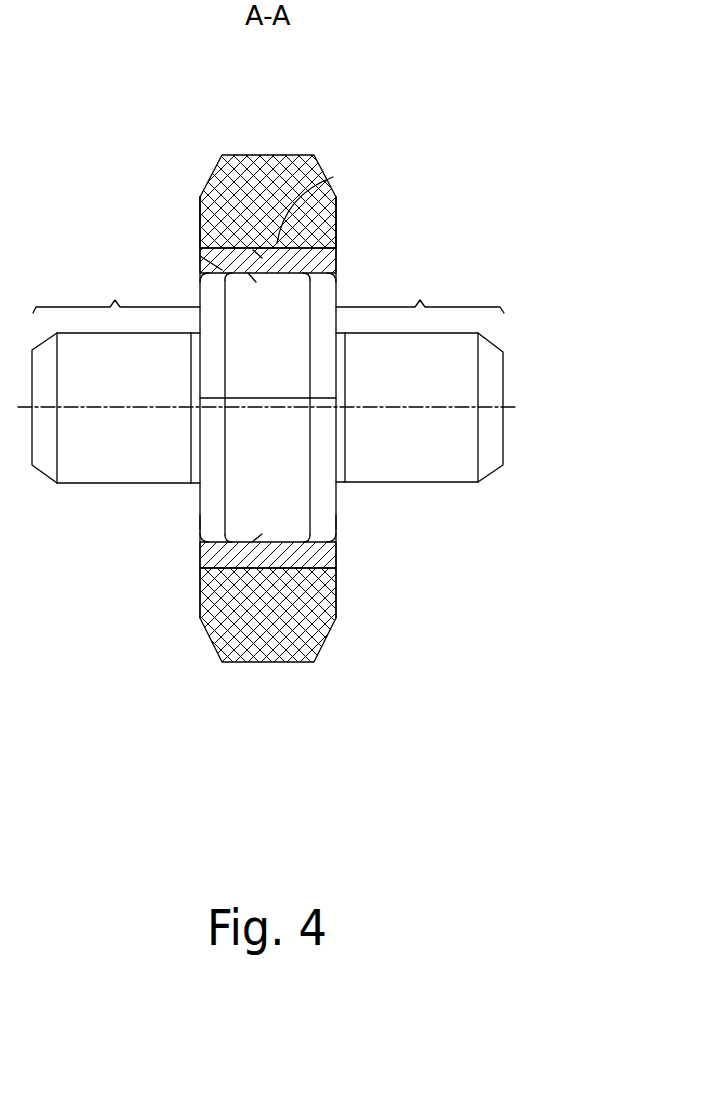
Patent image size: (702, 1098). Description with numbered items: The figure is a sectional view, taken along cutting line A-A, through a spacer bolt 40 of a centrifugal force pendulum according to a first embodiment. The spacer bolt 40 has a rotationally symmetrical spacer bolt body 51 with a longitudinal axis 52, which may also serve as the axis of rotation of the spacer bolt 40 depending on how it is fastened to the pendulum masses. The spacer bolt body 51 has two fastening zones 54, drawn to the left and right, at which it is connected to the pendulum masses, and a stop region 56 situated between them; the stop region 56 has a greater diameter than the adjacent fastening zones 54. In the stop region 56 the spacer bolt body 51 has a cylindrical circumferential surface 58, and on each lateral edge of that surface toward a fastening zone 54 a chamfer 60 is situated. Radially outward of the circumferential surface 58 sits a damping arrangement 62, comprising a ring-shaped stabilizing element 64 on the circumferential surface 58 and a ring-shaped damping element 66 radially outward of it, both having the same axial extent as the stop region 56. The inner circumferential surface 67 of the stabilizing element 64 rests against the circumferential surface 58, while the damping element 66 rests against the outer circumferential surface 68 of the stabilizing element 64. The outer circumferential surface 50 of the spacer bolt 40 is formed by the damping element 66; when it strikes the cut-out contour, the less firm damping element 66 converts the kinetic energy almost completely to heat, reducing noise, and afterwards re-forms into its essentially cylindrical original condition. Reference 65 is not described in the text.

The spacer bolt 40 is at (362, 649).
The outer circumferential surface 50 is at (264, 152).
The spacer bolt body 51 is at (453, 468).
The longitudinal axis 52 is at (495, 418).
The fastening zones 54 is at (268, 290).
The stop region 56 is at (283, 398).
The circumferential surface 58 is at (250, 272).
The chamfer 60 is at (210, 522).
The damping arrangement 62 is at (166, 141).
The stabilizing element 64 is at (320, 258).
The inner cap region 65 is at (333, 177).
The damping element 66 is at (331, 195).
The inner circumferential surface 67 is at (223, 271).
The outer circumferential surface 68 is at (253, 250).